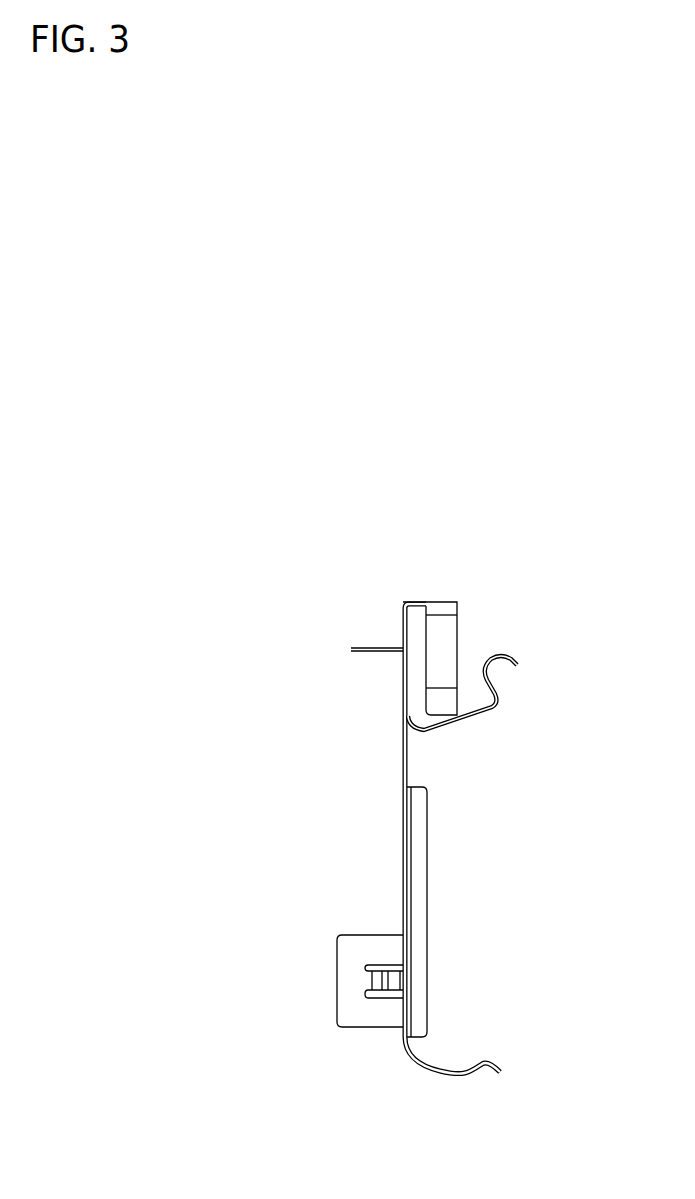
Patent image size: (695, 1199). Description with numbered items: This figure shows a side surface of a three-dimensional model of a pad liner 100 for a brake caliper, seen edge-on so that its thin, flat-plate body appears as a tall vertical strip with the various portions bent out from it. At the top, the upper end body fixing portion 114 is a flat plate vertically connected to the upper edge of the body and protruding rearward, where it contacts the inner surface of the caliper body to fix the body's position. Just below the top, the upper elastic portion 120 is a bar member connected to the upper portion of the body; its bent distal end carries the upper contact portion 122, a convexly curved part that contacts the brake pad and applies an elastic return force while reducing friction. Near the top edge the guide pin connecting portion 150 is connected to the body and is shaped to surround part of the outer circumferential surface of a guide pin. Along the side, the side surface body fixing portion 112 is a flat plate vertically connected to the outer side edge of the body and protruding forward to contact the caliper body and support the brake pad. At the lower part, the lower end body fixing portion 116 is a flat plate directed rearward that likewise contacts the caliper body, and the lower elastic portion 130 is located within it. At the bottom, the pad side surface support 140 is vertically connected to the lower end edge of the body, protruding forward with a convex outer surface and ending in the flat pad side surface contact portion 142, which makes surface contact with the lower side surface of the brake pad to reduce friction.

The pad liner 100 is at (293, 548).
The side surface body fixing portion 112 is at (417, 925).
The upper end body fixing portion 114 is at (370, 647).
The lower end body fixing portion 116 is at (353, 955).
The upper elastic portion 120 is at (442, 640).
The upper contact portion 122 is at (453, 702).
The lower elastic portion 130 is at (373, 978).
The pad side surface support 140 is at (447, 1075).
The pad side surface contact portion 142 is at (480, 1063).
The guide pin connecting portion 150 is at (483, 673).